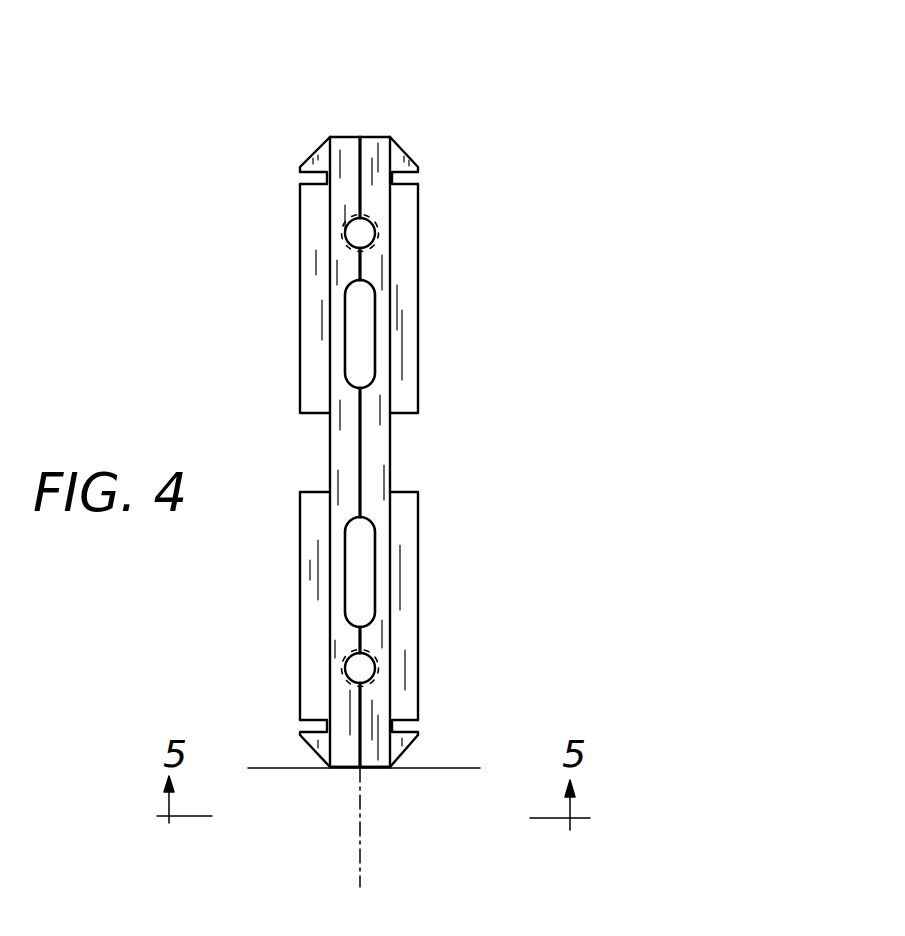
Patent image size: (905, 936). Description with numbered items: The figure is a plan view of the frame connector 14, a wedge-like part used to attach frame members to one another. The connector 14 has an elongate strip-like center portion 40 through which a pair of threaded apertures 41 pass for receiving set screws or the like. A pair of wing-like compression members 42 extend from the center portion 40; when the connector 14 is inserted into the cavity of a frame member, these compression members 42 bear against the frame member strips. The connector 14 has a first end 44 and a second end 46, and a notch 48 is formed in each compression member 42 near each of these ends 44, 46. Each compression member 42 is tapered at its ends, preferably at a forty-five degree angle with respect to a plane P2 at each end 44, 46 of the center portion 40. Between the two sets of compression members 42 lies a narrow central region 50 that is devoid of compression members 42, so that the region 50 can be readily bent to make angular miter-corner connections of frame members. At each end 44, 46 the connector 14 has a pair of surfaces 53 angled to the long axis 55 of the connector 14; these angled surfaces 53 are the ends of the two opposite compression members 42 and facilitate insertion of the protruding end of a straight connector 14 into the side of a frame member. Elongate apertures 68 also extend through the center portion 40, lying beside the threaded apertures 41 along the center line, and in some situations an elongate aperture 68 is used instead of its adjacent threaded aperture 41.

The frame connector 14 is at (432, 115).
The center portion 40 is at (360, 137).
The threaded apertures 41 is at (365, 234).
The compression members 42 is at (418, 350).
The first end 44 is at (343, 136).
The second end 46 is at (342, 770).
The notch 48 is at (417, 725).
The central region 50 is at (390, 447).
The angled surfaces 53 is at (313, 155).
The long axis 55 is at (361, 769).
The elongate apertures 68 is at (357, 347).
The plane P2 is at (384, 777).